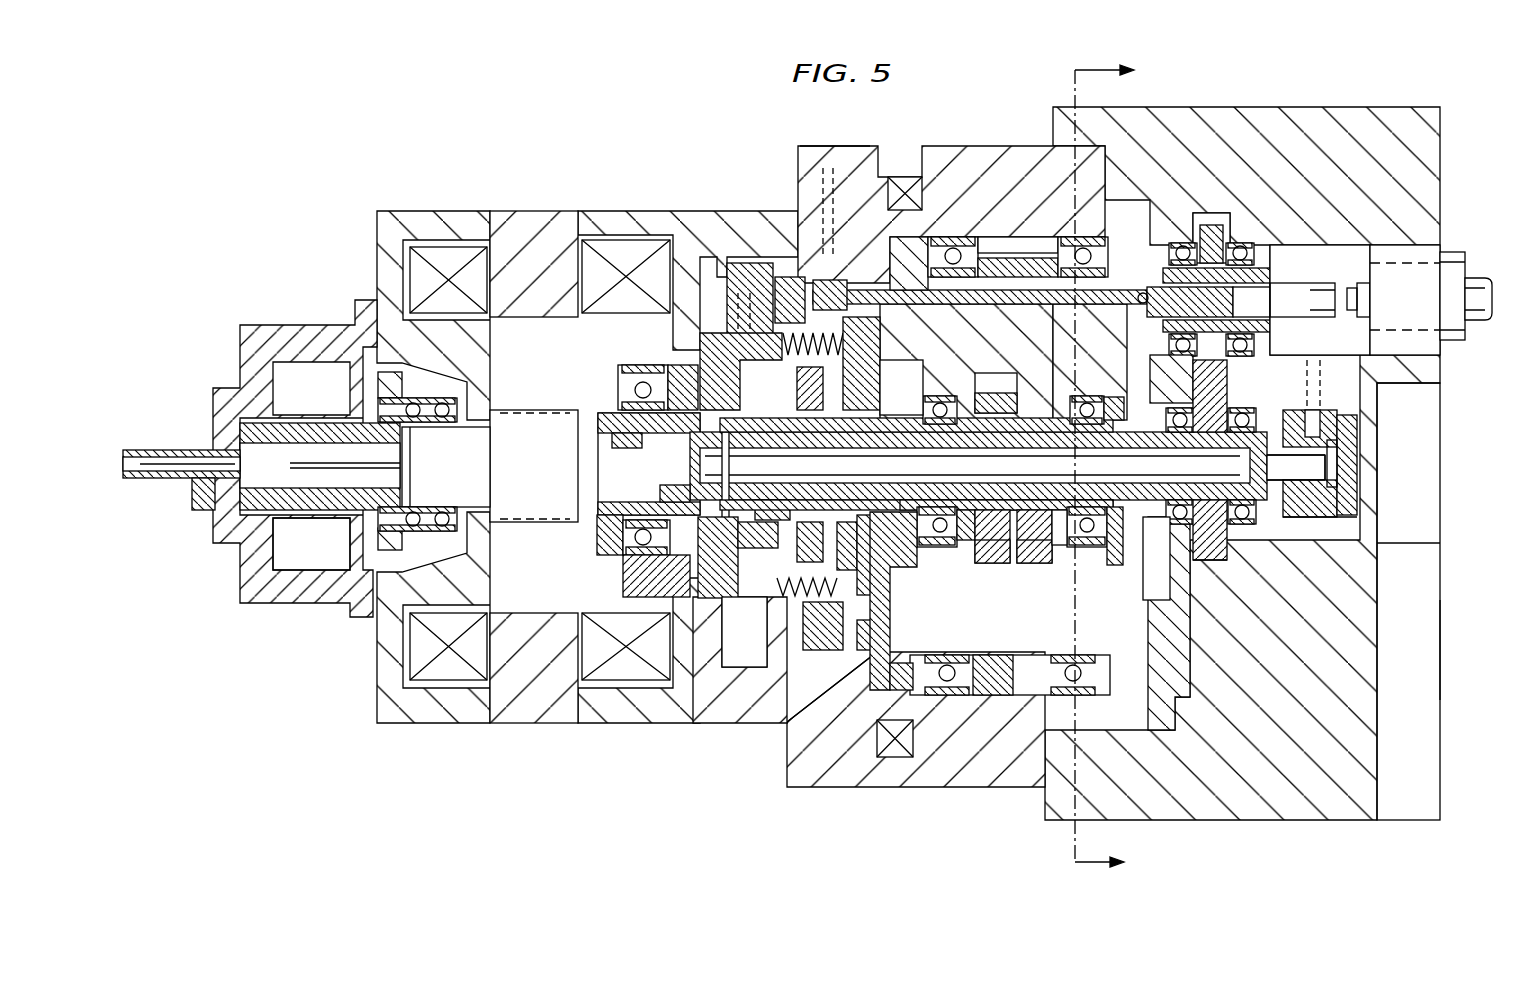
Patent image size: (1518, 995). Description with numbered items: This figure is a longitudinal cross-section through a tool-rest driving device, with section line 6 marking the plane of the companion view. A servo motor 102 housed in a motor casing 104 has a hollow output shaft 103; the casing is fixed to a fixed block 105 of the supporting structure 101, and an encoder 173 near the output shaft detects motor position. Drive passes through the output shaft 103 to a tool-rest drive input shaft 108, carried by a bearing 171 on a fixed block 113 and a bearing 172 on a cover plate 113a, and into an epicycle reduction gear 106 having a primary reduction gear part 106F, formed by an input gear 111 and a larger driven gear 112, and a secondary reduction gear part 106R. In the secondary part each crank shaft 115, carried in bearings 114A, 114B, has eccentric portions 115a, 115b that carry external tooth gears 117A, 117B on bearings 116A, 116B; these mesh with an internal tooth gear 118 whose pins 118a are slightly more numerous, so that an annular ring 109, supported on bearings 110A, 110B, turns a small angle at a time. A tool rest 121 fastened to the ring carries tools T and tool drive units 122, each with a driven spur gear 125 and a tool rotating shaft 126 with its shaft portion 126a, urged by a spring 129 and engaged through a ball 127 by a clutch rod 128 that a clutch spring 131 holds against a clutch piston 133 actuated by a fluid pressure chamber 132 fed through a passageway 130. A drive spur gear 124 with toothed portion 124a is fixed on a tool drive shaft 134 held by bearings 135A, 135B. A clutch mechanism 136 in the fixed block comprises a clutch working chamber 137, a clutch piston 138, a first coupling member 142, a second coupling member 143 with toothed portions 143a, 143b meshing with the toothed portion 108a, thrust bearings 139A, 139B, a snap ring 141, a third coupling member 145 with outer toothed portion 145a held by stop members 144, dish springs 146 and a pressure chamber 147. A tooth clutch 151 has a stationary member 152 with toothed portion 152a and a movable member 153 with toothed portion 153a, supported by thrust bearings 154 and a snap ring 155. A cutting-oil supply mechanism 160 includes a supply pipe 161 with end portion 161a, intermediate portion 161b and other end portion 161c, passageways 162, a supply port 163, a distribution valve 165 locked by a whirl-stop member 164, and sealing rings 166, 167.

The section line 6- 6 is at (1119, 467).
The supporting structure 101 is at (822, 125).
The servo motor 102 is at (578, 211).
The hollow output shaft 103 is at (612, 545).
The motor casing 104 is at (410, 211).
The fixed block 105 is at (798, 182).
The epicycle reduction gear 106 is at (1125, 615).
The primary reduction gear part 106F is at (870, 660).
The secondary reduction gear part 106R is at (1045, 695).
The tool-rest drive input shaft 108 is at (1110, 392).
The toothed portion 108a is at (800, 505).
The annular ring 109 is at (975, 146).
The bearing 110A is at (950, 240).
The bearing 110B is at (1068, 240).
The input gear 111 is at (915, 408).
The driven gear 112 is at (885, 630).
The fixed block 113 is at (1018, 346).
The cover plate 113a is at (1105, 357).
The bearing 114A is at (950, 548).
The bearing 114B is at (1085, 548).
The crank shaft 115 is at (1095, 560).
The circular eccentric portion 115a is at (1010, 587).
The circular eccentric portion 115b is at (1050, 587).
The bearing 116A is at (990, 578).
The bearing 116B is at (1031, 578).
The external tooth gear 117A is at (1000, 693).
The external tooth gear 117B is at (1073, 693).
The internal tooth gear 118 is at (992, 240).
The internal teeth 118a is at (975, 692).
The tool rest 121 is at (1440, 602).
The tool drive unit 122 is at (1241, 236).
The drive spur gear 124 is at (1221, 540).
The toothed portion 124a is at (1220, 563).
The driven spur gear 125 is at (1205, 215).
The tool rotating shaft 126 is at (1213, 319).
The shaft sleeve 126a is at (1163, 272).
The ball 127 is at (1138, 300).
The clutch rod 128 is at (935, 304).
The spring 129 is at (1270, 286).
The fluid pressure passageway 130 is at (883, 197).
The clutch spring 131 is at (835, 280).
The fluid pressure chamber 132 is at (745, 265).
The clutch piston 133 is at (785, 277).
The tool drive shaft 134 is at (1055, 440).
The bearing 135A is at (1150, 440).
The bearing 135B is at (1250, 440).
The clutch mechanism 136 is at (800, 675).
The clutch working chamber 137 is at (800, 600).
The clutch piston 138 is at (760, 580).
The thrust bearing 139A is at (672, 580).
The thrust bearing 139B is at (759, 549).
The snap ring 141 is at (655, 555).
The first coupling member 142 is at (626, 454).
The second coupling member 143 is at (700, 370).
The axially inner toothed portion 143a is at (640, 385).
The axially outer toothed portion 143b is at (800, 400).
The stop member 144 is at (735, 440).
The third coupling member 145 is at (760, 505).
The outer toothed portion 145a is at (680, 486).
The dish spring 146 is at (830, 598).
The pressure chamber 147 is at (720, 355).
The tooth clutch 151 is at (870, 330).
The stationary member 152 is at (845, 548).
The toothed portion 152a is at (905, 503).
The movable member 153 is at (865, 590).
The toothed portion 153a is at (860, 502).
The thrust bearing 154 is at (744, 632).
The snap ring 155 is at (830, 345).
The cutting-oil supply mechanism 160 is at (1427, 485).
The cutting-oil supply pipe 161 is at (197, 448).
The one end portion 161a is at (180, 486).
The intermediate portion 161b is at (600, 470).
The other end portion 161c is at (1165, 520).
The cutting-oil passageway 162 is at (1313, 384).
The supply port 163 is at (1310, 415).
The whirl-stop member 164 is at (1337, 462).
The distribution valve 165 is at (1360, 430).
The sealing ring 166 is at (1290, 520).
The sealing ring 167 is at (1320, 520).
The bearing 171 is at (940, 396).
The bearing 172 is at (1080, 400).
The encoder 173 is at (305, 562).
The tool T is at (1458, 330).